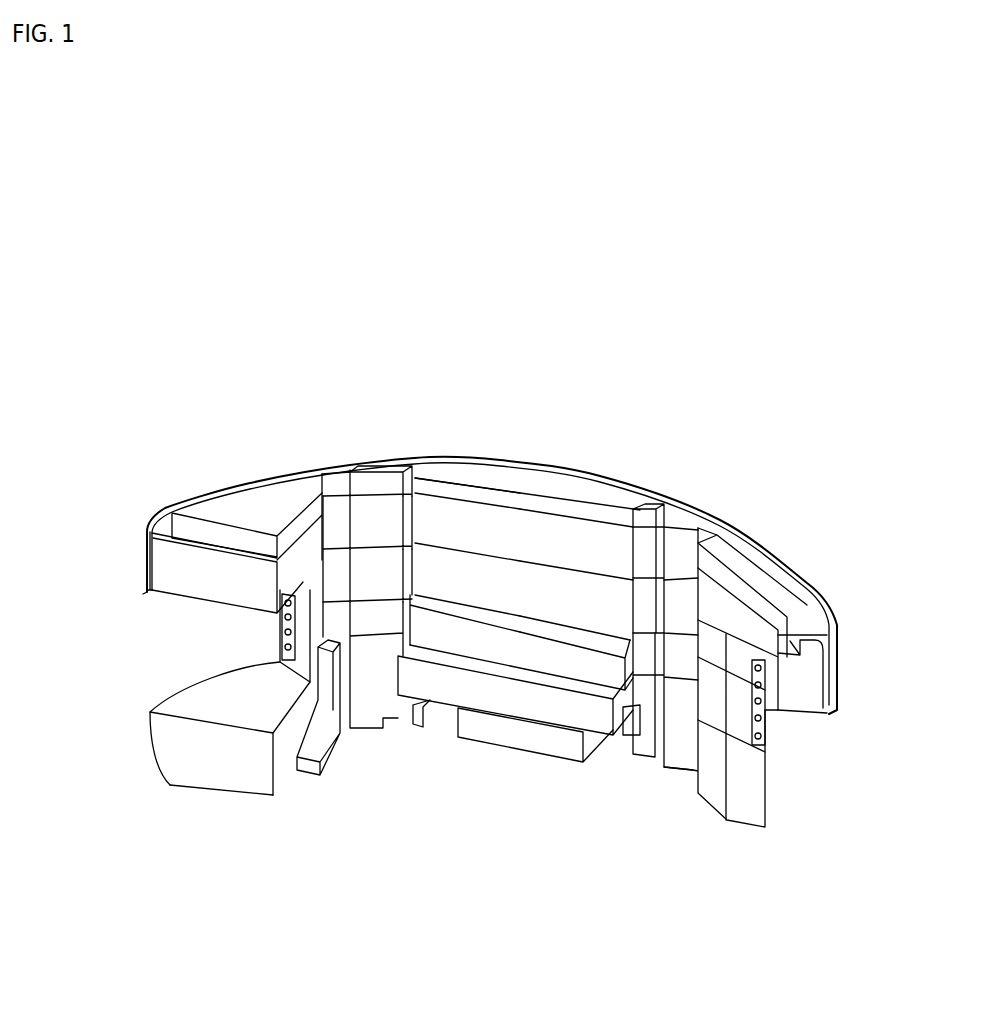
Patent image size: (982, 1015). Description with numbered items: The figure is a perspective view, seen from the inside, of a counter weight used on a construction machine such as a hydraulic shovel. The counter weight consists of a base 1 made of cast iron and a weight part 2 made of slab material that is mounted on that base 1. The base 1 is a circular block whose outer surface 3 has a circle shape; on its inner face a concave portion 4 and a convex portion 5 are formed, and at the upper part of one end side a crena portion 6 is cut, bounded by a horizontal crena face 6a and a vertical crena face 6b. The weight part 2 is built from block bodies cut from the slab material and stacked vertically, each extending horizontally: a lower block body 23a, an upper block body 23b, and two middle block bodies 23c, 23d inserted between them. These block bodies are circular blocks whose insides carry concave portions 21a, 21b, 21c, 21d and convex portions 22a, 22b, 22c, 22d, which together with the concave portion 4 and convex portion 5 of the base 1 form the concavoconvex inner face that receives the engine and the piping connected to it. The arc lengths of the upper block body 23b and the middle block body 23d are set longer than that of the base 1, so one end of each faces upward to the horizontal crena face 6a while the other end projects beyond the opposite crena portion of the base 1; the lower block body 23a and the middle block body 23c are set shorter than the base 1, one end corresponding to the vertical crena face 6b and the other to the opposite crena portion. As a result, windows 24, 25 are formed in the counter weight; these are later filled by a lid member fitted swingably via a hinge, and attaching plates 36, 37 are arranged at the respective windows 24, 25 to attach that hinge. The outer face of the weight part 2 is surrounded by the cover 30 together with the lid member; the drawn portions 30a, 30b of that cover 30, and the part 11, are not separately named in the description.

The base made of cast iron 1 is at (213, 800).
The weight part made of slab material 2 is at (207, 486).
The outer surface of the base 3 is at (780, 752).
The concave portion 4 is at (425, 710).
The convex portion 5 is at (328, 750).
The crena portion 6 is at (195, 688).
The horizontal crena face 6a is at (227, 677).
The vertical crena face 6b is at (280, 662).
The front face of right block 11 is at (752, 775).
The concave portion of lower block body 21a is at (345, 617).
The concave portion of upper block body 21b is at (345, 480).
The concave portion of middle block body 21c is at (355, 580).
The concave portion of middle block body 21d is at (355, 505).
The convex portion of lower block body 22a is at (590, 642).
The convex portion of upper block body 22b is at (300, 522).
The convex portion of middle block body 22c is at (550, 590).
The convex portion of middle block body 22d is at (300, 538).
The lower block body 23a is at (502, 642).
The upper block body 23b is at (437, 478).
The middle block body 23c is at (482, 580).
The middle block body 23d is at (462, 500).
The window 24 is at (183, 622).
The window 25 is at (817, 755).
The cover 30 is at (572, 468).
The left rim end 30a is at (148, 592).
The right rim end pocket 30b is at (832, 710).
The attaching plate 36 is at (280, 628).
The attaching plate 37 is at (782, 722).